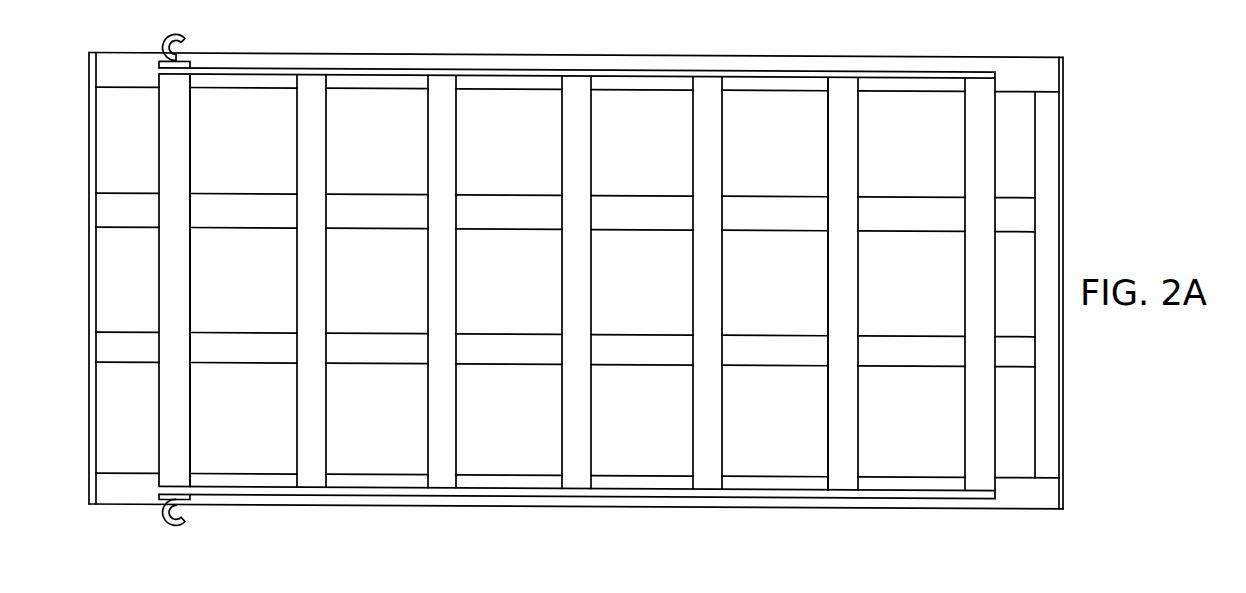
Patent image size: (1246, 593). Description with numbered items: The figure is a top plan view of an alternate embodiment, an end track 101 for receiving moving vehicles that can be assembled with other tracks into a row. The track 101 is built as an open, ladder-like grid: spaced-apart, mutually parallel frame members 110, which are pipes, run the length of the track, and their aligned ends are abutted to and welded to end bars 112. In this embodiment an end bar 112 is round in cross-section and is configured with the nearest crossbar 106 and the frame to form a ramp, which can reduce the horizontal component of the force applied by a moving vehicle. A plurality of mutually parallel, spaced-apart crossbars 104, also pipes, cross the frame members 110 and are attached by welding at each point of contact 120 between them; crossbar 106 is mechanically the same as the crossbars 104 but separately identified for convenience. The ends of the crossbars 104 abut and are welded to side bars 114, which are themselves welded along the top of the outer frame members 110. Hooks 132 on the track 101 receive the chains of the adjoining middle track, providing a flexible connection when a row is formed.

The track 101 is at (1150, 126).
The crossbar 104 is at (572, 278).
The crossbar 106 is at (1063, 215).
The frame member 110 is at (632, 212).
The end bar 112 is at (89, 287).
The side bar 114 is at (415, 72).
The point of contact 120 is at (858, 198).
The hook 132 is at (183, 71).